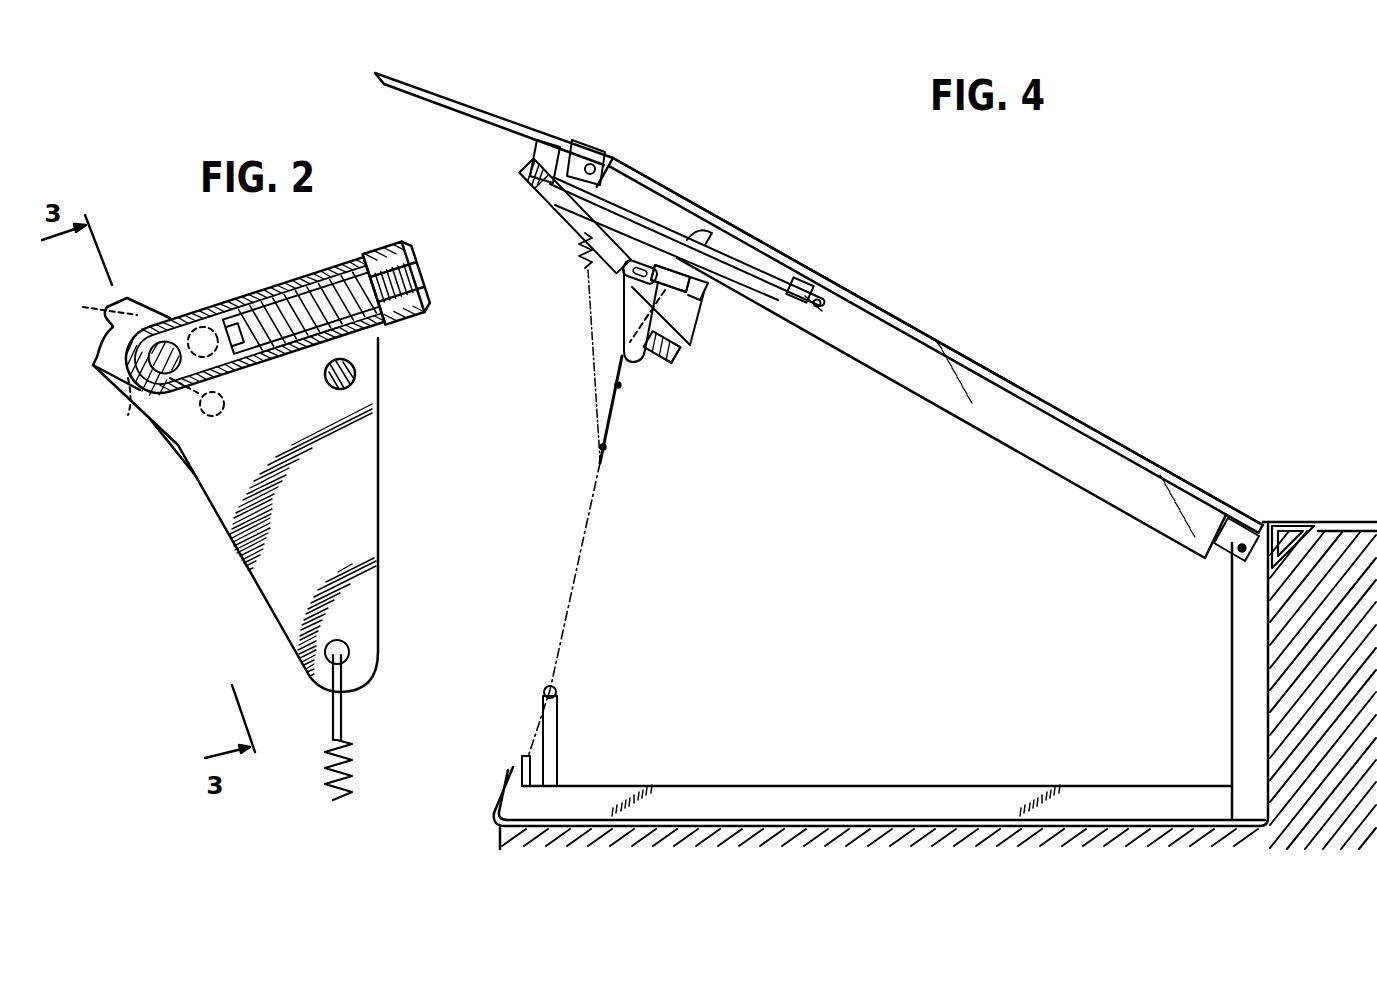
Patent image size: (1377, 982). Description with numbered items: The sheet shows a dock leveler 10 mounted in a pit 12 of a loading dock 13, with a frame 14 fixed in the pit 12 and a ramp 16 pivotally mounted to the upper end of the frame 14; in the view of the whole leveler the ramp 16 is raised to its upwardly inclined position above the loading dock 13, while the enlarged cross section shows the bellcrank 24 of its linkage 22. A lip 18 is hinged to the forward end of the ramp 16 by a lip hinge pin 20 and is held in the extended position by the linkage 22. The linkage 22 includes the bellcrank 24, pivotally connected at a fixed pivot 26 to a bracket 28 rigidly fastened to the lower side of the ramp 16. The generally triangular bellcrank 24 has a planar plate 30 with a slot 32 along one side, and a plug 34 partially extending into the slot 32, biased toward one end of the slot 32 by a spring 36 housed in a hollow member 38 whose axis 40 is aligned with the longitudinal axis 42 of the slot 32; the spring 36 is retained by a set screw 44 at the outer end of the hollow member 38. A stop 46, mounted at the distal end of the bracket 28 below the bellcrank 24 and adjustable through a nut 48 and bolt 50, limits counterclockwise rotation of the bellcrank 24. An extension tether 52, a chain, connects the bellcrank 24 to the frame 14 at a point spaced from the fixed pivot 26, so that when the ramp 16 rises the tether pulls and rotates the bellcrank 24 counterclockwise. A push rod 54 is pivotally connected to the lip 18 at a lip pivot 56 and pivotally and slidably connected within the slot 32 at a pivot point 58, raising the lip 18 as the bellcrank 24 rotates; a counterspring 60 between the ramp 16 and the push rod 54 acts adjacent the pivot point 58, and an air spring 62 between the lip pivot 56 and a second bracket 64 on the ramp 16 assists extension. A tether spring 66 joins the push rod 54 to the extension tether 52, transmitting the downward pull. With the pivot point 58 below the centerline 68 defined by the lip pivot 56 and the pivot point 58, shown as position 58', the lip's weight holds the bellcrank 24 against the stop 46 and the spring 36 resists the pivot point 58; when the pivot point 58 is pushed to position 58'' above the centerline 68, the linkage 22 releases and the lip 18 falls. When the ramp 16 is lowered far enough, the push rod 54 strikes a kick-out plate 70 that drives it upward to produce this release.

In FIG. 4, the dock leveler 10 is at (898, 183).
In FIG. 4, the pit 12 is at (1204, 730).
In FIG. 4, the loading dock 13 is at (1320, 522).
In FIG. 4, the frame 14 is at (738, 792).
In FIG. 4, the ramp 16 is at (1095, 440).
In FIG. 4, the lip 18 is at (452, 96).
In FIG. 4, the lip hinge pin 20 is at (592, 160).
In FIG. 4, the linkage 22 is at (743, 407).
In FIG. 2, the bellcrank 24 is at (245, 255).
In FIG. 4, the bellcrank 24 is at (631, 303).
In FIG. 2, the fixed pivot 26 is at (355, 388).
In FIG. 4, the fixed pivot 26 is at (688, 333).
In FIG. 4, the bracket 28 is at (737, 243).
In FIG. 2, the plate 30 is at (372, 492).
In FIG. 2, the slot 32 is at (173, 440).
In FIG. 2, the plug 34 is at (262, 298).
In FIG. 2, the spring 36 is at (308, 290).
In FIG. 2, the hollow member 38 is at (300, 372).
In FIG. 2, the axis 40 is at (416, 264).
In FIG. 2, the longitudinal axis 42 is at (129, 402).
In FIG. 2, the set screw 44 is at (396, 256).
In FIG. 4, the stop 46 is at (677, 373).
In FIG. 4, the nut 48 is at (680, 355).
In FIG. 4, the bolt 50 is at (632, 376).
In FIG. 2, the extension tether 52 is at (332, 708).
In FIG. 4, the extension tether 52 is at (583, 547).
In FIG. 2, the push rod 54 is at (128, 306).
In FIG. 4, the push rod 54 is at (560, 214).
In FIG. 4, the lip pivot 56 is at (530, 166).
In FIG. 2, the pivot point 58 is at (166, 318).
In FIG. 4, the pivot point 58 is at (596, 279).
In FIG. 2, the pivot point position below centerline 58' is at (208, 309).
In FIG. 2, the pivot point position above centerline 58'' is at (214, 412).
In FIG. 4, the counterspring 60 is at (694, 236).
In FIG. 4, the air spring 62 is at (795, 280).
In FIG. 4, the second bracket 64 is at (832, 297).
In FIG. 4, the tether spring 66 is at (590, 400).
In FIG. 4, the centerline 68 is at (640, 224).
In FIG. 4, the kick-out plate 70 is at (553, 715).